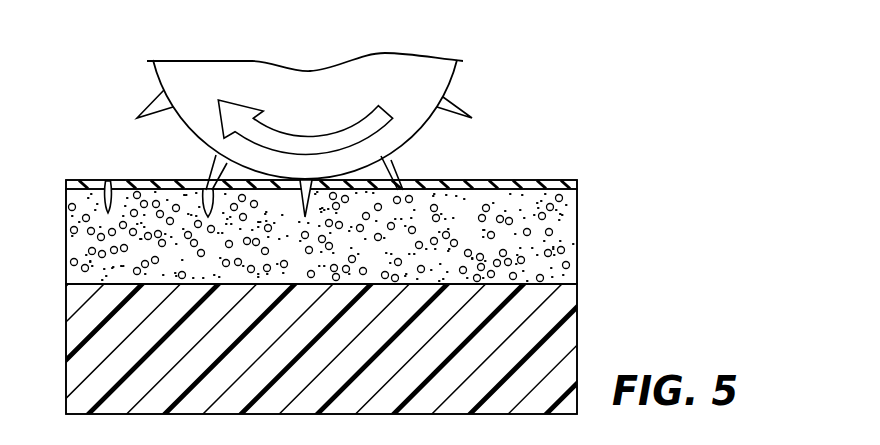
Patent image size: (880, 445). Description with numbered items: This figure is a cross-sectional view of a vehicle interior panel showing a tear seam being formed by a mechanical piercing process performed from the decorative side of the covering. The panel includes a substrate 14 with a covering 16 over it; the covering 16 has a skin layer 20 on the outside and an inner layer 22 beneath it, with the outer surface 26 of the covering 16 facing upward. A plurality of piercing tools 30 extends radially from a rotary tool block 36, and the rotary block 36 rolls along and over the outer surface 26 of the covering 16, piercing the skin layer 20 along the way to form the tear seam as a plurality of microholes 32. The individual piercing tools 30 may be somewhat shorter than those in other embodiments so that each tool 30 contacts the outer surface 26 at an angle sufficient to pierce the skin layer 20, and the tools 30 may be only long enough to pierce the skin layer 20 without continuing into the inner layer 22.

The substrate 14 is at (68, 353).
The covering 16 is at (604, 238).
The skin layer 20 is at (64, 187).
The inner layer 22 is at (70, 265).
The outer surface 26 is at (90, 182).
The piercing tools 30 is at (460, 118).
The microholes 32 is at (108, 179).
The rotary tool block 36 is at (195, 80).